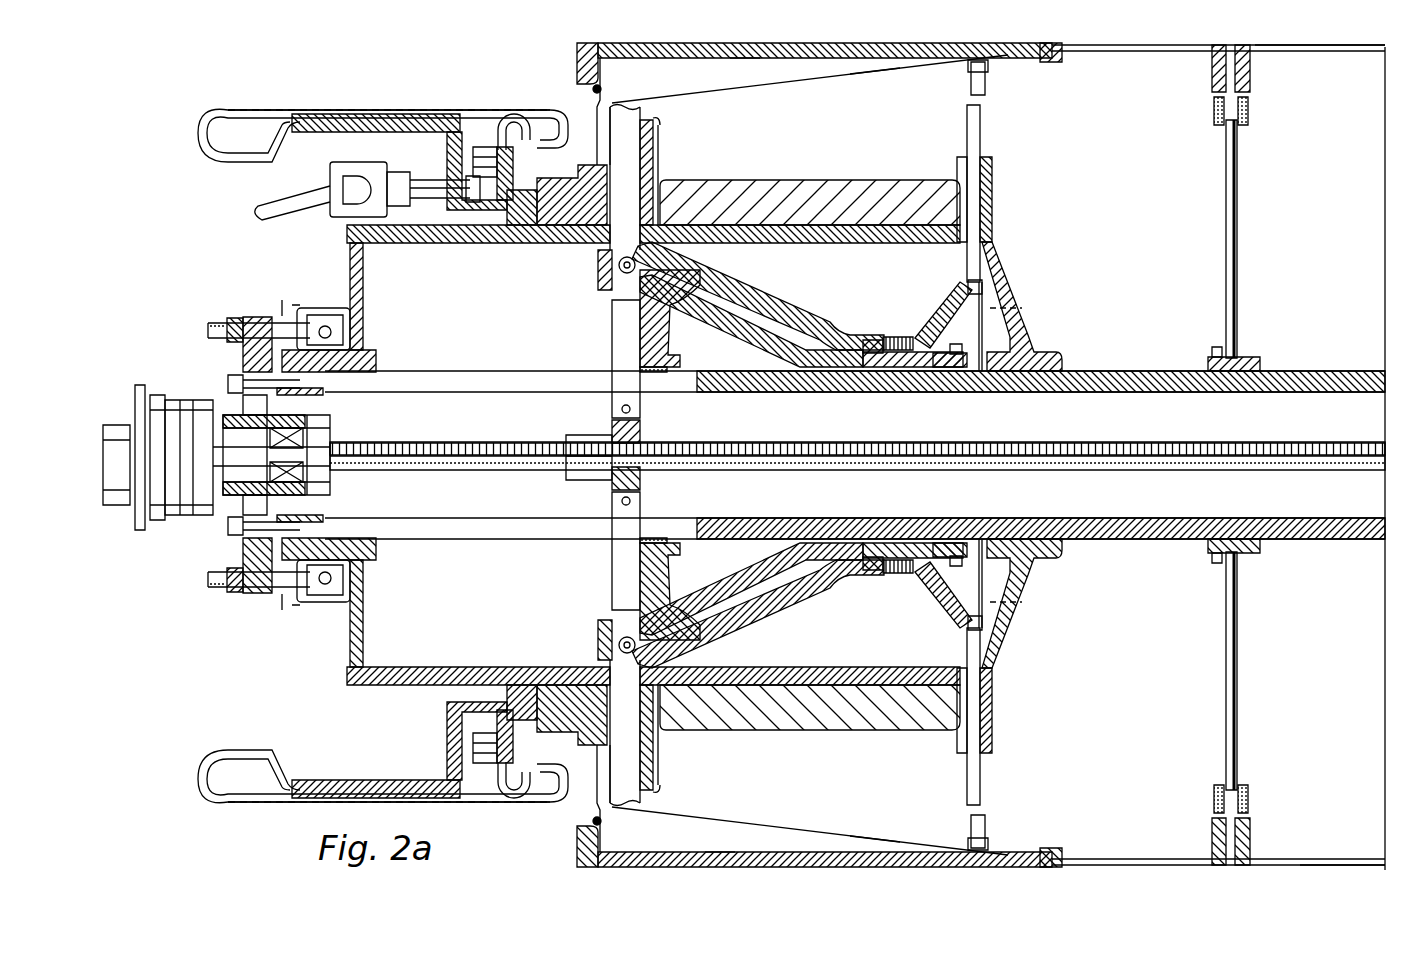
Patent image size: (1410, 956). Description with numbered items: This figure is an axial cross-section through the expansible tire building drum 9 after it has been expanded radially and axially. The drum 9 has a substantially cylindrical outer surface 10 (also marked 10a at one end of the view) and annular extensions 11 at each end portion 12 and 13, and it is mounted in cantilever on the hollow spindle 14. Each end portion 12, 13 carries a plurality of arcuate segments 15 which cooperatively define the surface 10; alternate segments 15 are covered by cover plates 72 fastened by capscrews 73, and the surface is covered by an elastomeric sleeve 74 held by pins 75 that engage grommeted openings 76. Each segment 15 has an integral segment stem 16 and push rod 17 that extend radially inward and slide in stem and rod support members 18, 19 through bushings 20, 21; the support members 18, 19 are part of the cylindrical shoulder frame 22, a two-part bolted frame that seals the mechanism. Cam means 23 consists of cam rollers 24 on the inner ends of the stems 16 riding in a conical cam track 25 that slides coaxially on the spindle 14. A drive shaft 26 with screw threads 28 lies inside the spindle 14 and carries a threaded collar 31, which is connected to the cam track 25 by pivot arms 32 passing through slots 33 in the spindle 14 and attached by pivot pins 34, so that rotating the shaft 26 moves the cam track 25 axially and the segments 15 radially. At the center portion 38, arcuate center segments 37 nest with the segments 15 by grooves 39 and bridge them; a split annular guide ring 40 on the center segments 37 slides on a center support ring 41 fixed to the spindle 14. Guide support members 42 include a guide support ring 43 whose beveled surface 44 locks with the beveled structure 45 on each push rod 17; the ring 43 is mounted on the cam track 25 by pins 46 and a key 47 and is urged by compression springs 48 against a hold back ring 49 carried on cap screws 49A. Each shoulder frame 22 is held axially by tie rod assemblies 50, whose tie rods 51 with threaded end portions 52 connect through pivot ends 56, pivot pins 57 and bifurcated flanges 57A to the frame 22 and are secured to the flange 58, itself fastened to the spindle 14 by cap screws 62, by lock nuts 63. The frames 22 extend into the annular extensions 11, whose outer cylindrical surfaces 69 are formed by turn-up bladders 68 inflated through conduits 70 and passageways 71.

The expansible building drum 9 is at (1273, 48).
The cylindrical outer surface 10 is at (1322, 862).
The end plate 10a is at (1335, 47).
The annular extensions 11 is at (498, 106).
The end portion 12 is at (800, 76).
The end portion 13 is at (772, 828).
The hollow spindle 14 is at (1082, 392).
The arcuate segments 15 is at (880, 70).
The segment stem 16 is at (630, 123).
The push rod 17 is at (981, 130).
The stem support member 18 is at (650, 150).
The rod support member 19 is at (992, 200).
The bushing 20 is at (658, 165).
The bushing 21 is at (993, 170).
The cylindrical shoulder frame 22 is at (825, 180).
The cam means 23 is at (735, 292).
The cam rollers 24 is at (598, 265).
The conical cam track 25 is at (780, 318).
The drive shaft 26 is at (745, 470).
The screw threads 28 is at (800, 442).
The threaded collar 31 is at (640, 430).
The pivot arms 32 is at (620, 372).
The slots 33 is at (480, 392).
The pivot pins 34 is at (620, 409).
The arcuate center segments 37 is at (1128, 52).
The center portion 38 is at (1208, 58).
The grooves 39 is at (972, 72).
The split annular guide ring 40 is at (1250, 88).
The center support ring 41 is at (1238, 210).
The guide support members 42 is at (968, 282).
The guide support ring 43 is at (950, 315).
The beveled surface 44 is at (1010, 255).
The beveled structure 45 is at (1023, 453).
The pins 46 is at (890, 338).
The key 47 is at (915, 368).
The compression springs 48 is at (900, 337).
The hold back ring 49 is at (948, 370).
The cap screws 49A is at (958, 368).
The tie rod assemblies 50 is at (288, 280).
The tie rods 51 is at (300, 308).
The threaded end portions 52 is at (208, 326).
The pivot ends 56 is at (318, 310).
The pivot pins 57 is at (331, 331).
The bifurcated flanges 57A is at (365, 290).
The flange 58 is at (243, 350).
The cap screws 62 is at (228, 380).
The lock nuts 63 is at (240, 318).
The turn-up bladders 68 is at (400, 105).
The outer cylindrical surfaces 69 is at (455, 114).
The conduits 70 is at (300, 200).
The passageways 71 is at (513, 160).
The cover plates 72 is at (655, 60).
The capscrews 73 is at (740, 58).
The elastomeric sleeve 74 is at (1048, 62).
The pins 75 is at (593, 89).
The openings 76 is at (577, 62).